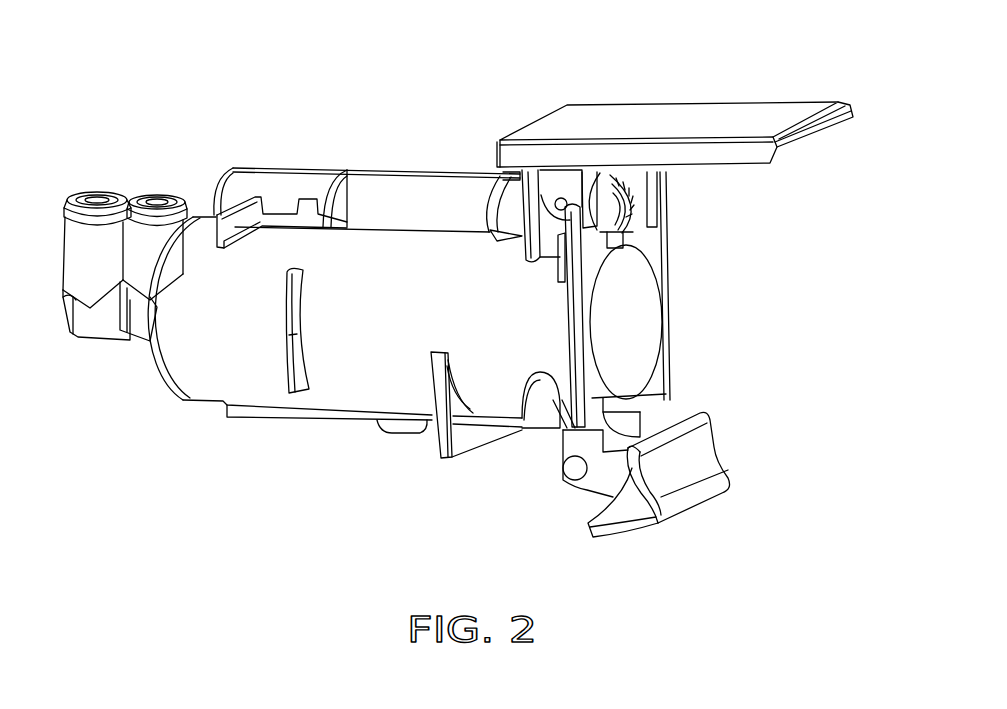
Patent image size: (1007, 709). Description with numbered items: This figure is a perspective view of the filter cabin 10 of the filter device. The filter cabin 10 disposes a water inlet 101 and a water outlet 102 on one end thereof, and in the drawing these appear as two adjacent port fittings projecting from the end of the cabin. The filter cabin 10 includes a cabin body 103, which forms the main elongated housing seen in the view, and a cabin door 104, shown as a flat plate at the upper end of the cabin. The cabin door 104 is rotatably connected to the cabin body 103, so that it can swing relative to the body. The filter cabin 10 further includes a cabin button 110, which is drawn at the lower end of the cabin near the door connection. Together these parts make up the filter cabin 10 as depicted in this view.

The filter cabin 10 is at (380, 197).
The water inlet 101 is at (163, 197).
The water outlet 102 is at (95, 190).
The cabin body 103 is at (353, 397).
The cabin door 104 is at (728, 113).
The cabin button 110 is at (680, 477).